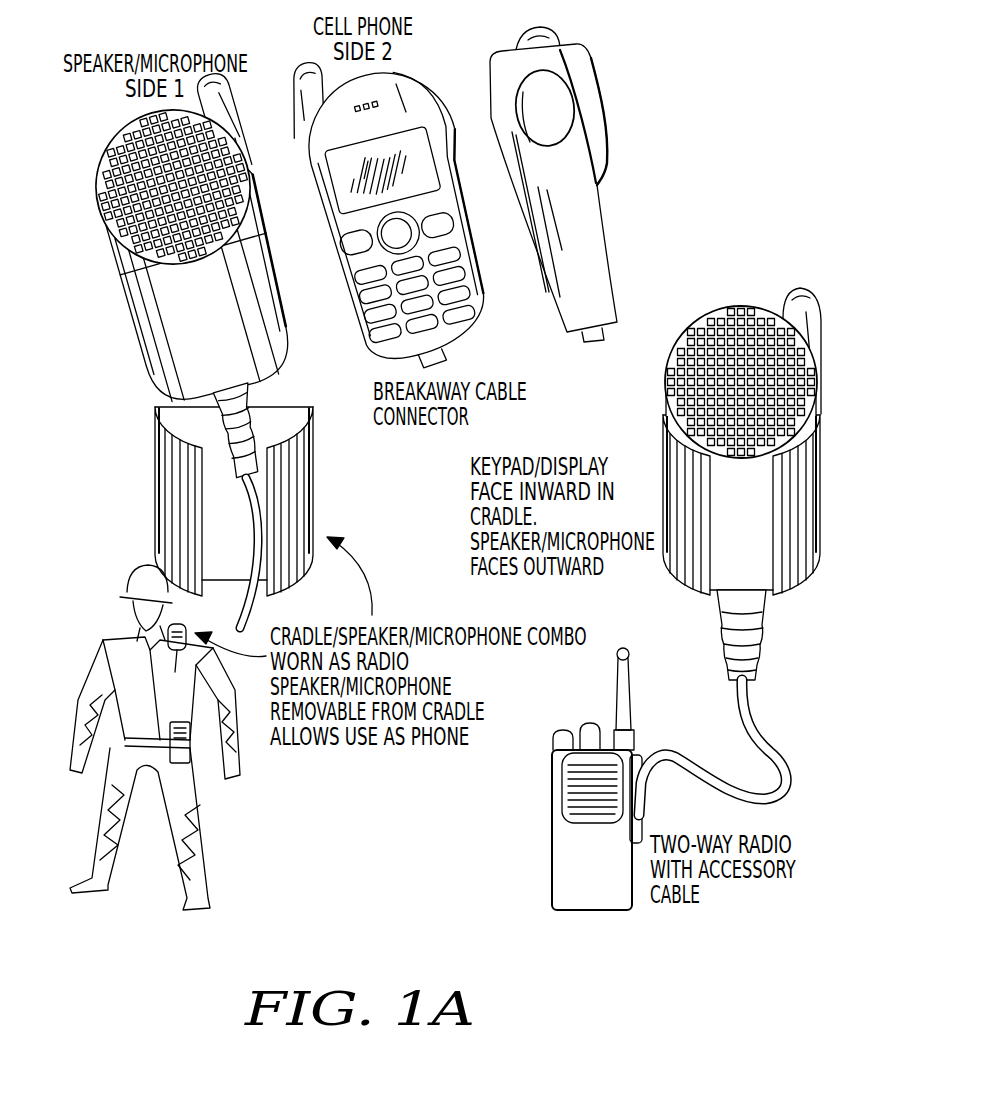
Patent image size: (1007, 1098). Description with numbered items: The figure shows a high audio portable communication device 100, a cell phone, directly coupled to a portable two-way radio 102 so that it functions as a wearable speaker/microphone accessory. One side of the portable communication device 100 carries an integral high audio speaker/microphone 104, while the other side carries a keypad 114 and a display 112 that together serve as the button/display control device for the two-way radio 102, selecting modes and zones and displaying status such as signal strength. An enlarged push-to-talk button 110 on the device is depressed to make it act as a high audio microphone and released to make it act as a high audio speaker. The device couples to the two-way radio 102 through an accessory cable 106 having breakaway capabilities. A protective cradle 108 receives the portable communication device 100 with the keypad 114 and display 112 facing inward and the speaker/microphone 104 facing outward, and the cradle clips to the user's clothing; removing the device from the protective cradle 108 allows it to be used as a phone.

The portable communication device 100 is at (140, 318).
The portable two-way radio 102 is at (552, 866).
The integral speaker/microphone 104 is at (115, 226).
The accessory cable 106 is at (760, 728).
The protective cradle 108 is at (155, 480).
The push-to-talk (PTT) button 110 is at (549, 103).
The display 112 is at (340, 192).
The keypad 114 is at (455, 330).